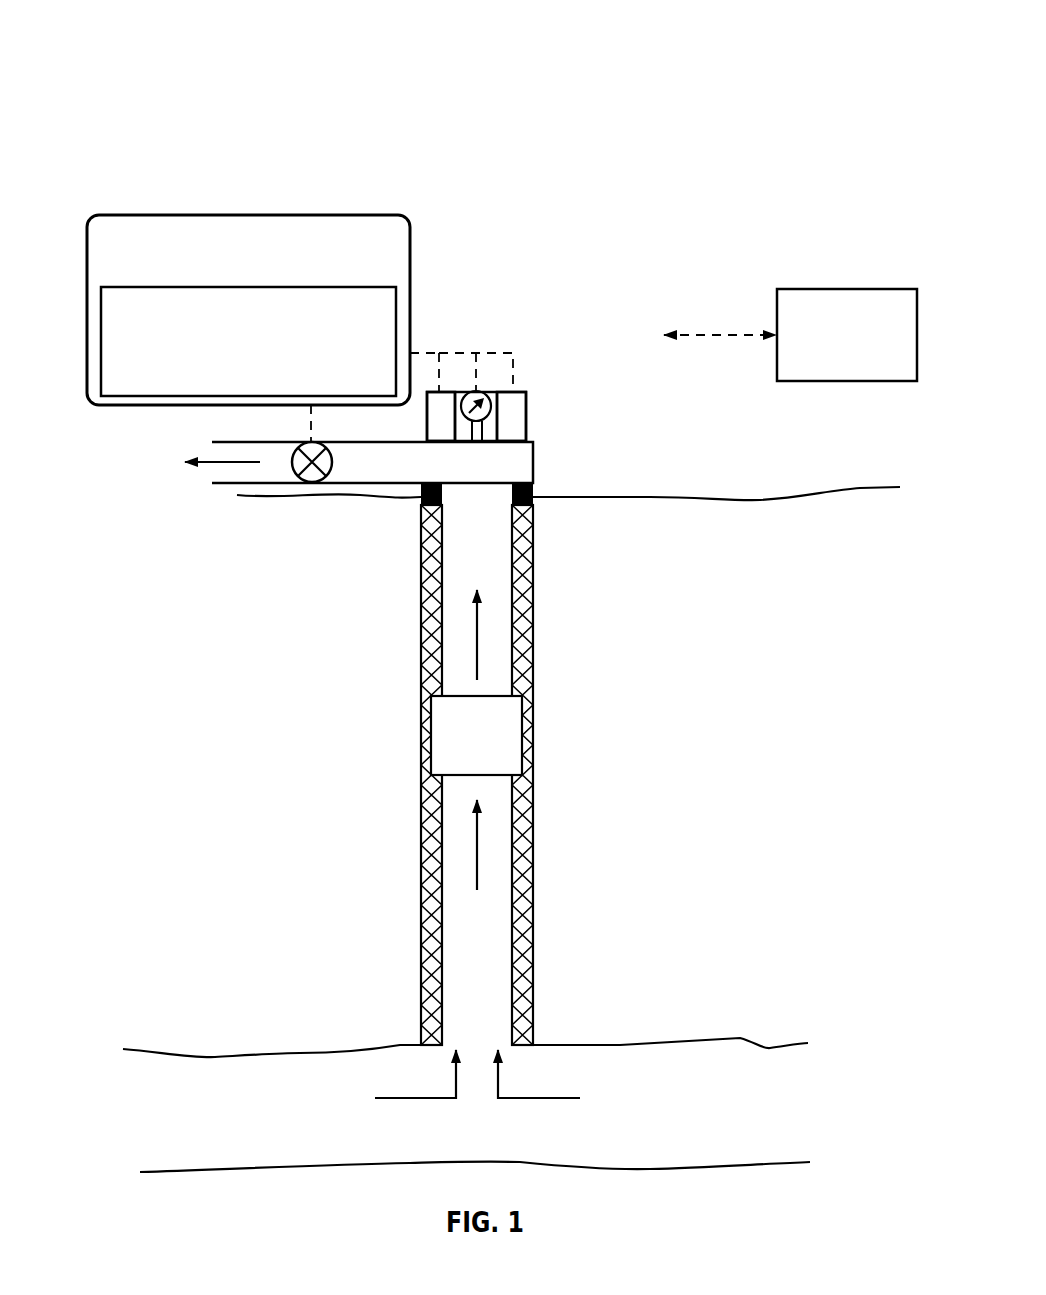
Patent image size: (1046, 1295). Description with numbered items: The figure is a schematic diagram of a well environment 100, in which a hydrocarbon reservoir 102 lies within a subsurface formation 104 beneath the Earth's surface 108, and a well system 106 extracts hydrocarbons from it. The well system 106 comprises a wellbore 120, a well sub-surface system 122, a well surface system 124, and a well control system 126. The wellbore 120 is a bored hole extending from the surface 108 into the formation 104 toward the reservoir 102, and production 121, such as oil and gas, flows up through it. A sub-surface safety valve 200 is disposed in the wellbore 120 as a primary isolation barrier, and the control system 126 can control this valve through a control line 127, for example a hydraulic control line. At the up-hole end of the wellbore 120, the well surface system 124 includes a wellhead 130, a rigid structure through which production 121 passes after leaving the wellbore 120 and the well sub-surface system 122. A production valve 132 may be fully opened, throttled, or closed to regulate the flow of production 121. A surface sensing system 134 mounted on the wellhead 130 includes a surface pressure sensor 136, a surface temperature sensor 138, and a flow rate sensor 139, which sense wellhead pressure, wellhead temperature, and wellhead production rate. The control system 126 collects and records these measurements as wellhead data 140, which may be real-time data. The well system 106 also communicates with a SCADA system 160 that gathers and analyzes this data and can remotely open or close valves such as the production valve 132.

The well environment 100 is at (652, 47).
The hydrocarbon reservoir 102 is at (703, 1143).
The subsurface formation 104 is at (727, 847).
The well system 106 is at (235, 128).
The surface 108 is at (704, 507).
The wellbore 120 is at (509, 775).
The production 121 is at (140, 490).
The well sub-surface system 122 is at (369, 674).
The well surface system 124 is at (764, 144).
The well control system 126 is at (274, 280).
The control line 127 is at (421, 604).
The wellhead 130 is at (539, 481).
The production valve 132 is at (310, 483).
The surface sensing system 134 is at (530, 415).
The surface pressure sensor 136 is at (490, 392).
The surface temperature sensor 138 is at (518, 392).
The flow rate sensor 139 is at (429, 392).
The wellhead data 140 is at (274, 368).
The SCADA system 160 is at (885, 289).
The sub-surface safety valve 200 is at (502, 765).